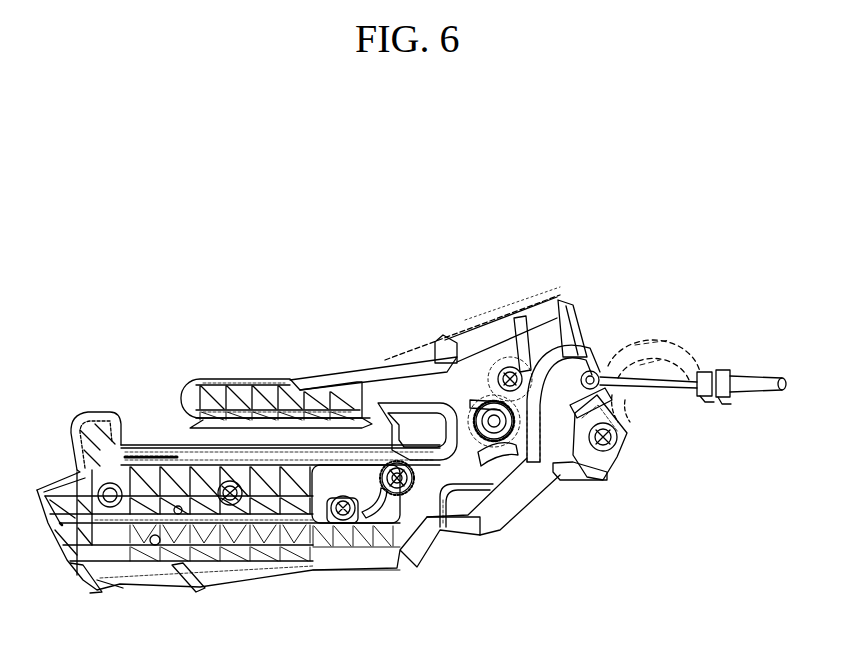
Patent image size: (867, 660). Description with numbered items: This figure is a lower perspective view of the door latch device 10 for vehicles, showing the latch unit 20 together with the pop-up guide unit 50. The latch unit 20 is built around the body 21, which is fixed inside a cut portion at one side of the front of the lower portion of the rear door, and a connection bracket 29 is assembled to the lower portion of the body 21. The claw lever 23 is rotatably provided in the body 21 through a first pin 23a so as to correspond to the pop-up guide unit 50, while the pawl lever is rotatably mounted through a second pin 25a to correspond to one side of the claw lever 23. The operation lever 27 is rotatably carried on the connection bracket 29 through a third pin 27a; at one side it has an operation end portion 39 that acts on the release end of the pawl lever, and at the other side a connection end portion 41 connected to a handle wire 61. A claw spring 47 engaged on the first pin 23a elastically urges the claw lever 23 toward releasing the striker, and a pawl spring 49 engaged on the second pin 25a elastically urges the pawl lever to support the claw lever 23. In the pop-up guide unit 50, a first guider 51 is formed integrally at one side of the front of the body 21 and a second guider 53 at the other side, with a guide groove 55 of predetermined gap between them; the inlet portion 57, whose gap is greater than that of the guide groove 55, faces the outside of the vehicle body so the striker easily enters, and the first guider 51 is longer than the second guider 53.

The door latch device 10 is at (272, 272).
The latch unit 20 is at (520, 288).
The body 21 is at (437, 500).
The claw lever 23 is at (418, 400).
The first pin 23a is at (392, 402).
The second pin 25a is at (482, 405).
The operation lever 27 is at (587, 478).
The third pin 27a is at (622, 437).
The connection bracket 29 is at (688, 348).
The operation end portion 39 is at (555, 473).
The connection end portion 41 is at (593, 370).
The claw spring 47 is at (403, 494).
The pawl spring 49 is at (523, 462).
The pop-up guide unit 50 is at (127, 276).
The first guider 51 is at (87, 412).
The second guider 53 is at (217, 383).
The guide groove 55 is at (263, 430).
The inlet portion 57 is at (148, 407).
The handle wire 61 is at (643, 383).